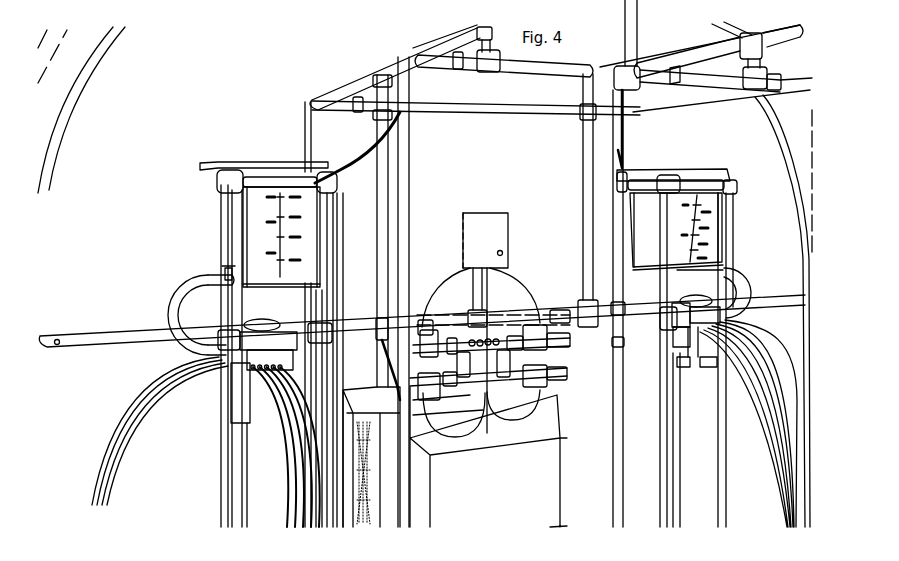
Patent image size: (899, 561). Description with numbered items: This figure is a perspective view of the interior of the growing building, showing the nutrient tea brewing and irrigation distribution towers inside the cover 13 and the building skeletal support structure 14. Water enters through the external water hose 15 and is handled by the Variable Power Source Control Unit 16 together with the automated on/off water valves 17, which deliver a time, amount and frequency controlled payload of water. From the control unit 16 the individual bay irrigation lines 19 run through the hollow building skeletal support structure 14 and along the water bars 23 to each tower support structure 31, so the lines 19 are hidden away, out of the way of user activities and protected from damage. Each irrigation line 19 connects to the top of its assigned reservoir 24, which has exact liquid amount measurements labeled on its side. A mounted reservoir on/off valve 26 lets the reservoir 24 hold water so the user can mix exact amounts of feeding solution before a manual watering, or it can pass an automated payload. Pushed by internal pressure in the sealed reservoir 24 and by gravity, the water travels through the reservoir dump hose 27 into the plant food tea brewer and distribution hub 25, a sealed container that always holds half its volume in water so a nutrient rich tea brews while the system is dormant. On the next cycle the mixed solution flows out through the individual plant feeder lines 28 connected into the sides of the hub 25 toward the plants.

The cover 13 is at (197, 82).
The building skeletal support structure 14 is at (496, 92).
The external water hose 15 is at (487, 330).
The Variable Power Source Control Unit 16 is at (502, 217).
The automated on/off water valves 17 is at (553, 363).
The individual bay Irrigation Lines 19 is at (355, 157).
The water bars 23 is at (713, 53).
The reservoir 24 is at (218, 164).
The plant food tea brewer and distribution hub 25 is at (250, 378).
The reservoir on/off valve 26 is at (226, 270).
The reservoir dump hose 27 is at (177, 290).
The individual plant feeder lines 28 is at (147, 393).
The tower support structure 31 is at (217, 196).